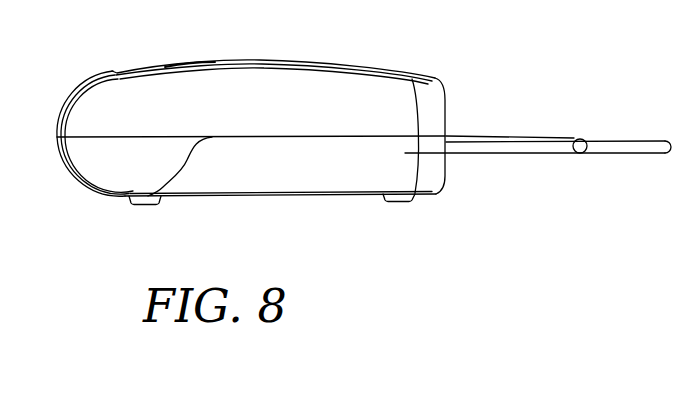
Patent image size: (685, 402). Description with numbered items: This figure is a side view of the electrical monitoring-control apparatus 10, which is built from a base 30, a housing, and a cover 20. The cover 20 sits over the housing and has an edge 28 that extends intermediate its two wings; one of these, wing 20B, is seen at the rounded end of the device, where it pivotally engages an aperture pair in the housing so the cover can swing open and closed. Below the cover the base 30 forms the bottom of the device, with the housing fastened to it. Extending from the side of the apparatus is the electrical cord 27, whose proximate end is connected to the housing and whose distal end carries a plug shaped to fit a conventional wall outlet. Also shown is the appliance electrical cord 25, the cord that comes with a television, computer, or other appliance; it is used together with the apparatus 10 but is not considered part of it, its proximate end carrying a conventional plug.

The electrical monitoring-control apparatus 10 is at (355, 150).
The cover 20 is at (328, 116).
The wing 20B is at (110, 175).
The appliance electrical cord 25 is at (658, 144).
The electrical cord 27 is at (563, 142).
The edge 28 is at (191, 65).
The base 30 is at (325, 169).